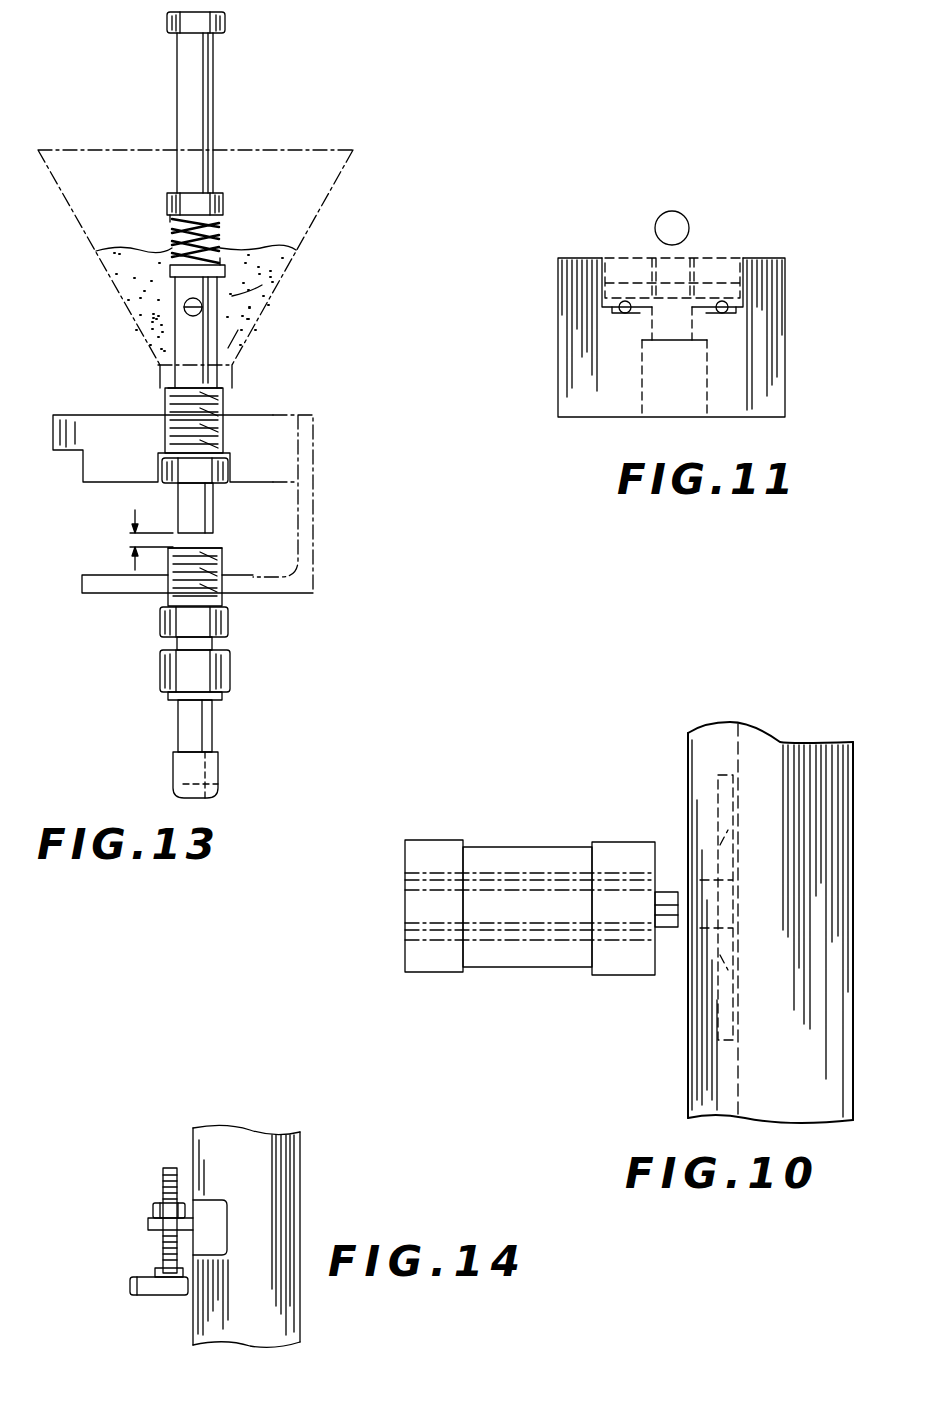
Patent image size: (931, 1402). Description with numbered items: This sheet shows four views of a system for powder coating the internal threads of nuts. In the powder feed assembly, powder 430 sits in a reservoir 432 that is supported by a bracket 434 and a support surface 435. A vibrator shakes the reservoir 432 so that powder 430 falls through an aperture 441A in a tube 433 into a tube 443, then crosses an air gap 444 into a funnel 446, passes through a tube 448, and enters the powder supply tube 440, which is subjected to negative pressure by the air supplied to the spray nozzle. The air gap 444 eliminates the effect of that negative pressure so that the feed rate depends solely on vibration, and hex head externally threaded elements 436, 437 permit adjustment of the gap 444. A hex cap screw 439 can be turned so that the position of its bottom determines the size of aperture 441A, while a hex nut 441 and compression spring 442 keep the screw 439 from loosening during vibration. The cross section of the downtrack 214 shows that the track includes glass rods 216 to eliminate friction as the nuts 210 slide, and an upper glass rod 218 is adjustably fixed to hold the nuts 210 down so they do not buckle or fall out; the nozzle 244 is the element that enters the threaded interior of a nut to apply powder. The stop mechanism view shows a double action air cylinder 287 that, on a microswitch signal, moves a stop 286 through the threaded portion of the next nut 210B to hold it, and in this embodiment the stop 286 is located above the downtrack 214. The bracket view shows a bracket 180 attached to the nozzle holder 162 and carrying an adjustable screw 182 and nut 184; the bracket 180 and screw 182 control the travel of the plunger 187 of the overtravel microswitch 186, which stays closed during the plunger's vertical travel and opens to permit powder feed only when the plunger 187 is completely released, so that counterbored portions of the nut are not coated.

In FIG. 13, the hex cap screw 439 is at (212, 72).
In FIG. 13, the powder 430 is at (124, 272).
In FIG. 13, the hex nut 441 is at (216, 202).
In FIG. 13, the compression spring 442 is at (170, 227).
In FIG. 13, the aperture 441A is at (203, 318).
In FIG. 13, the tube 433 is at (245, 300).
In FIG. 13, the reservoir 432 is at (243, 333).
In FIG. 13, the hex head externally threaded element 436 is at (230, 402).
In FIG. 13, the support surface 435 is at (288, 414).
In FIG. 13, the bracket 434 is at (318, 516).
In FIG. 13, the tube 443 is at (214, 510).
In FIG. 13, the air gap 444 is at (122, 541).
In FIG. 13, the hex head externally threaded element 437 is at (221, 537).
In FIG. 13, the funnel 446 is at (200, 577).
In FIG. 13, the tube 448 is at (214, 725).
In FIG. 13, the powder supply tube 440 is at (218, 776).
In FIG. 11, the downtrack 214 is at (772, 375).
In FIG. 10, the downtrack 214 is at (808, 765).
In FIG. 11, the nozzle 244 is at (683, 392).
In FIG. 11, the nut 210 is at (622, 258).
In FIG. 11, the glass rods 216 is at (620, 315).
In FIG. 11, the upper glass rod 218 is at (655, 218).
In FIG. 10, the nut 210B is at (710, 845).
In FIG. 10, the double action air cylinder 287 is at (527, 850).
In FIG. 10, the stop 286 is at (668, 928).
In FIG. 14, the nozzle holder 162 is at (285, 1140).
In FIG. 14, the adjustable screw 182 is at (168, 1172).
In FIG. 14, the nut 184 is at (152, 1208).
In FIG. 14, the bracket 180 is at (148, 1225).
In FIG. 14, the plunger 187 is at (154, 1270).
In FIG. 14, the microswitch 186 is at (142, 1290).